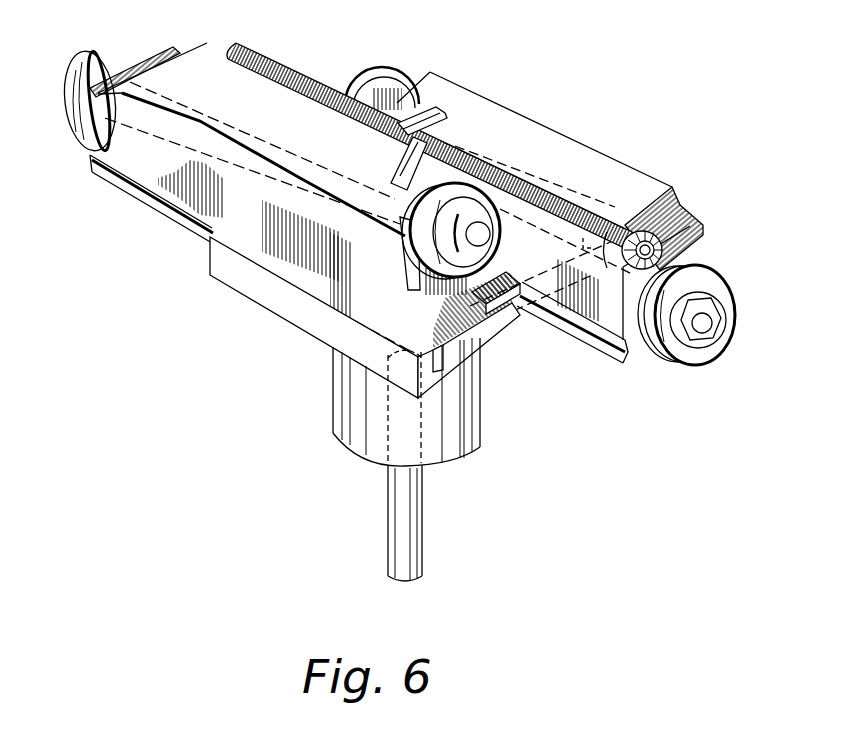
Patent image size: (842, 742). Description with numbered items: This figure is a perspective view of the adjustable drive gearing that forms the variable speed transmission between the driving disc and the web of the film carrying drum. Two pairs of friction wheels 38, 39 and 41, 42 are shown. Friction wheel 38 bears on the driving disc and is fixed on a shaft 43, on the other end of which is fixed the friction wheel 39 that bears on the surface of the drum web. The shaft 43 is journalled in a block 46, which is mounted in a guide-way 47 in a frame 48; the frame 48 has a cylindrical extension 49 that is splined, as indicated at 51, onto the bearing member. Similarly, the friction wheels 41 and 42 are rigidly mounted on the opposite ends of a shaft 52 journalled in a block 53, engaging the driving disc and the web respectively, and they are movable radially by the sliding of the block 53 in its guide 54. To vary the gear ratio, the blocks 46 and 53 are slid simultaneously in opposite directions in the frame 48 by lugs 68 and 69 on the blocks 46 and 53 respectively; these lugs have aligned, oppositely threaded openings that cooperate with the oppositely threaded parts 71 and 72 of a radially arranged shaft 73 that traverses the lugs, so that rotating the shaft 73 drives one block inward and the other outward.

The friction wheel 38 is at (412, 246).
The friction wheel 39 is at (75, 118).
The friction wheel 41 is at (368, 68).
The friction wheel 42 is at (680, 356).
The shaft 43 is at (200, 148).
The block 46 is at (246, 203).
The guide-way 47 is at (462, 350).
The frame 48 is at (492, 341).
The cylindrical extension 49 is at (350, 424).
The spline 51 is at (453, 452).
The shaft 52 is at (556, 238).
The block 53 is at (550, 141).
The guide 54 is at (515, 305).
The lug 68 is at (406, 161).
The lug 69 is at (412, 119).
The threaded part 71 is at (458, 147).
The threaded part 72 is at (348, 117).
The radially arranged shaft 73 is at (582, 216).